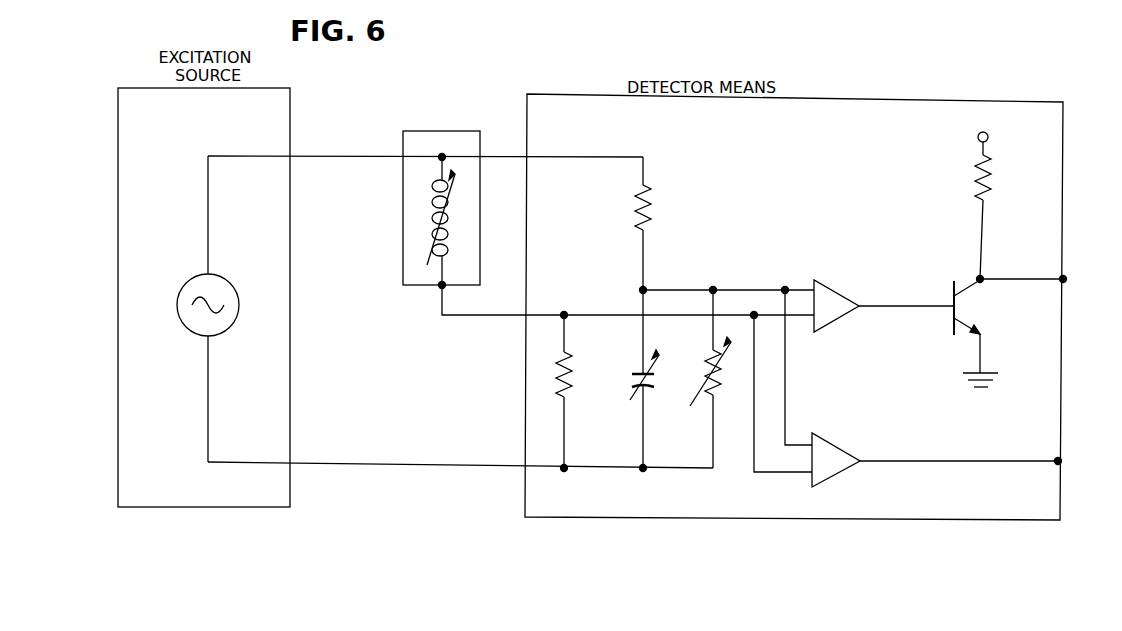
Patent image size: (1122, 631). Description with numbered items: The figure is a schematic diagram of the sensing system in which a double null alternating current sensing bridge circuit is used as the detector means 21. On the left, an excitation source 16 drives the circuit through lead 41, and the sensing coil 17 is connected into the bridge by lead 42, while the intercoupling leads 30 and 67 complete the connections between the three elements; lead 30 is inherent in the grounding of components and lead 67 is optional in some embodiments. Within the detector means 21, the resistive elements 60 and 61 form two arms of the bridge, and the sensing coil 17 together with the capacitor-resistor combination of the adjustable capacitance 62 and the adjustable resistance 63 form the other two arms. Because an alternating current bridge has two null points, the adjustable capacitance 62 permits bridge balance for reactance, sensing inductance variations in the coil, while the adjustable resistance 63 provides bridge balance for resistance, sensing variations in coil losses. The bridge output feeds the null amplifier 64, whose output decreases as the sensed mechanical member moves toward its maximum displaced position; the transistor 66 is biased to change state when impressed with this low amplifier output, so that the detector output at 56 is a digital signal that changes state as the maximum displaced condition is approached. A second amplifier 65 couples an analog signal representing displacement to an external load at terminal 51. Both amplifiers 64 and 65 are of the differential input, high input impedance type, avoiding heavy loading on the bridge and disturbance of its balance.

The excitation source 16 is at (118, 128).
The lead 41 is at (352, 156).
The lead 30 is at (400, 466).
The sensing coil 17 is at (480, 148).
The lead 42 is at (515, 157).
The lead 67 is at (458, 316).
The detector means 21 is at (572, 94).
The resistive element 61 is at (653, 207).
The resistive element 60 is at (570, 375).
The adjustable capacitance 62 is at (636, 372).
The adjustable resistance 63 is at (705, 372).
The null amplifier 64 is at (836, 318).
The amplifier 65 is at (834, 441).
The transistor 66 is at (1003, 316).
The output 56 is at (1066, 281).
The output terminal 51 is at (1062, 462).